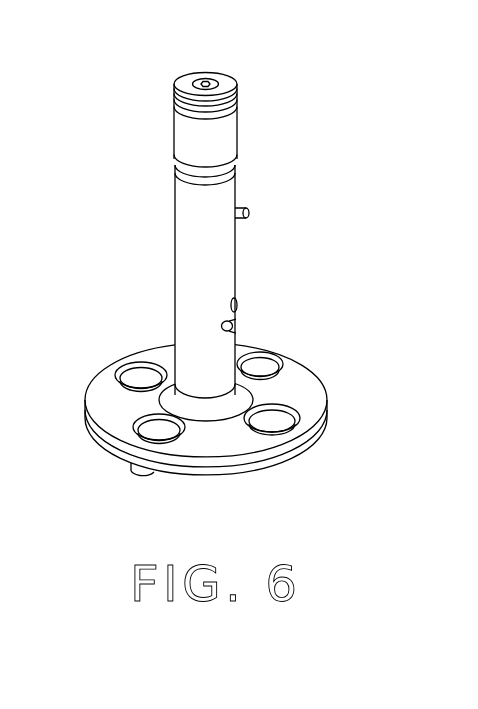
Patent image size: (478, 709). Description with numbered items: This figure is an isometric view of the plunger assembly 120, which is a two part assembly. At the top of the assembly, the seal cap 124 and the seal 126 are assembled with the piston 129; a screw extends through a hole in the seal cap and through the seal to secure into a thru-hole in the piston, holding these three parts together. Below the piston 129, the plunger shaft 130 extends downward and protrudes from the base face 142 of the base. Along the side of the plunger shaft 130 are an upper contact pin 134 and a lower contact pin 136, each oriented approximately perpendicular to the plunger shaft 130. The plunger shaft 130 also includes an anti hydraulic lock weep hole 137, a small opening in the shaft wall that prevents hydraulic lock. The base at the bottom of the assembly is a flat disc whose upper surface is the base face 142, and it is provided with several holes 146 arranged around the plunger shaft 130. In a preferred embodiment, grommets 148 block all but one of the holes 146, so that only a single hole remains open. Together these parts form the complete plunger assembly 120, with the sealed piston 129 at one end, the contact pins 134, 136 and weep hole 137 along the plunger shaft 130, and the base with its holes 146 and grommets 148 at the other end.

The plunger assembly 120 is at (333, 213).
The seal cap 124 is at (222, 81).
The seal 126 is at (177, 106).
The piston 129 is at (226, 140).
The plunger shaft 130 is at (174, 290).
The upper contact pin 134 is at (250, 213).
The lower contact pin 136 is at (234, 326).
The anti hydraulic lock weep hole 137 is at (238, 300).
The base face 142 is at (293, 391).
The holes 146 is at (298, 420).
The grommets 148 is at (116, 375).